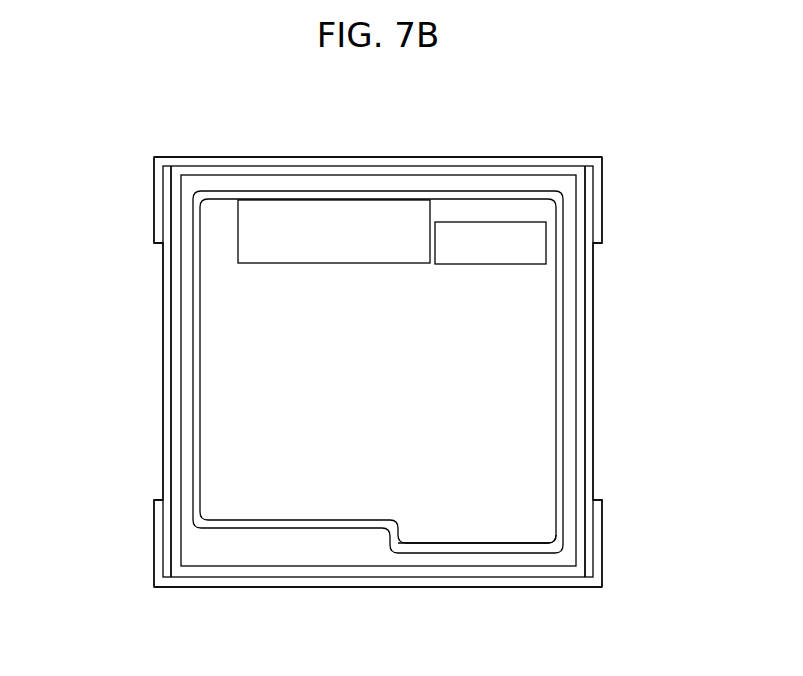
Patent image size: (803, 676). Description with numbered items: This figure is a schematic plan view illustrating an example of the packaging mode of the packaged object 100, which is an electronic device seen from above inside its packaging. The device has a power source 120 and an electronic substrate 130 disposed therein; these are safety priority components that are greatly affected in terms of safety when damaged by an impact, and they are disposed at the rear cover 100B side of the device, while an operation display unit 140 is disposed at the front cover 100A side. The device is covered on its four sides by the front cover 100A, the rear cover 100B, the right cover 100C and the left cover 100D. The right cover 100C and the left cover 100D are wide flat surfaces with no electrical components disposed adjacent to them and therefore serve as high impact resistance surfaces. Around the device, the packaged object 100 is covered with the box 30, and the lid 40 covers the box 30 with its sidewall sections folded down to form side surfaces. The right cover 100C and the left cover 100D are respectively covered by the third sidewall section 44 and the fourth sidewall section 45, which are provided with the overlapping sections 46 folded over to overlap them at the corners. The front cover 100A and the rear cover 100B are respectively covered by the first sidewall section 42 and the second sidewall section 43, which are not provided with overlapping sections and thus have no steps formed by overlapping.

The box 30 is at (177, 375).
The lid 40 is at (148, 263).
The first sidewall section 42 is at (385, 598).
The second sidewall section 43 is at (385, 152).
The third sidewall section 44 is at (605, 372).
The fourth sidewall section 45 is at (155, 437).
The overlapping sections 46 is at (157, 193).
The packaged object 100 is at (378, 371).
The front cover 100A is at (305, 522).
The rear cover 100B is at (358, 198).
The right cover 100C is at (563, 392).
The left cover 100D is at (190, 443).
The power source 120 is at (334, 231).
The electronic substrate 130 is at (490, 243).
The operation display unit 140 is at (478, 530).